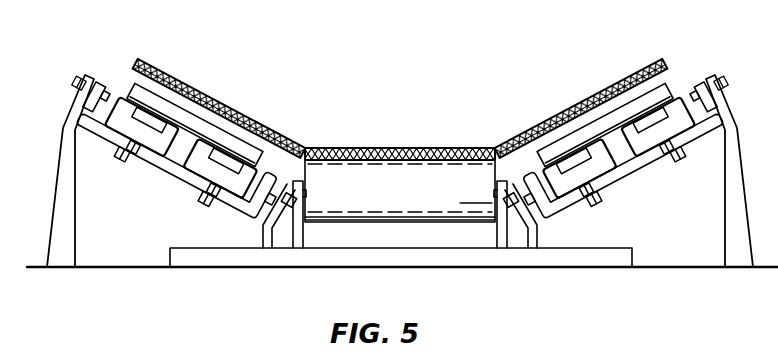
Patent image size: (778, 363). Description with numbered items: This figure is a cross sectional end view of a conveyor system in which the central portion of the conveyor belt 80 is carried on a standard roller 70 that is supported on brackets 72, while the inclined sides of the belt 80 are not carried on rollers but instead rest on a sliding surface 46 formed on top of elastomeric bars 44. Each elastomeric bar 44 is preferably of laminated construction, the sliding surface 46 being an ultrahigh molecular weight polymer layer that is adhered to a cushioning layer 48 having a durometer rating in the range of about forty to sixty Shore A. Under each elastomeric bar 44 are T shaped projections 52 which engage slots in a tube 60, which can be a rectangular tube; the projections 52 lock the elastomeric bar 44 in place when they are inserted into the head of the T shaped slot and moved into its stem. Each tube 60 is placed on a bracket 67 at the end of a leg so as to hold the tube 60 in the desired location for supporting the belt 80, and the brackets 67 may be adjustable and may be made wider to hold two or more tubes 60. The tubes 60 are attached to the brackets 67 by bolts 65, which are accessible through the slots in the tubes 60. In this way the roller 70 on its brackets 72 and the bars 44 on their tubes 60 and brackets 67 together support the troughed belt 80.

The elastomeric bar 44 is at (90, 67).
The first layer 46 is at (133, 80).
The cushioning layer 48 is at (124, 88).
The T shaped projection 52 is at (136, 116).
The tube 60 is at (112, 110).
The bolt 65 is at (124, 154).
The bracket 67 is at (97, 127).
The roller 70 is at (409, 198).
The bracket 72 is at (289, 240).
The conveyor belt 80 is at (296, 148).